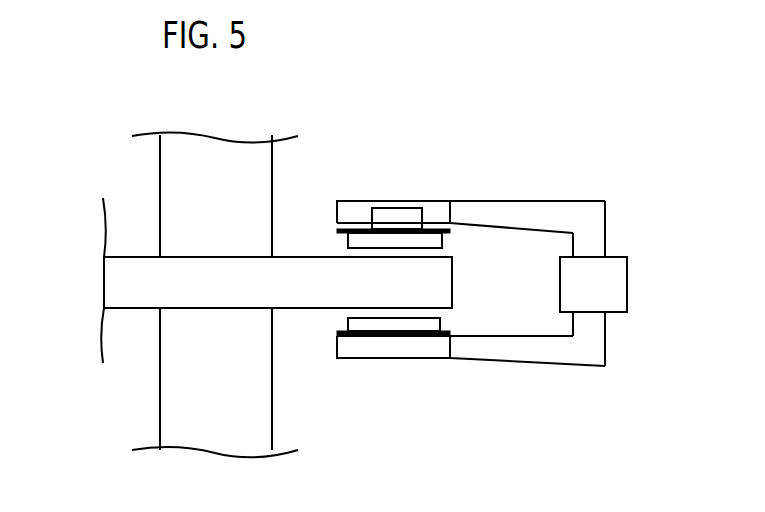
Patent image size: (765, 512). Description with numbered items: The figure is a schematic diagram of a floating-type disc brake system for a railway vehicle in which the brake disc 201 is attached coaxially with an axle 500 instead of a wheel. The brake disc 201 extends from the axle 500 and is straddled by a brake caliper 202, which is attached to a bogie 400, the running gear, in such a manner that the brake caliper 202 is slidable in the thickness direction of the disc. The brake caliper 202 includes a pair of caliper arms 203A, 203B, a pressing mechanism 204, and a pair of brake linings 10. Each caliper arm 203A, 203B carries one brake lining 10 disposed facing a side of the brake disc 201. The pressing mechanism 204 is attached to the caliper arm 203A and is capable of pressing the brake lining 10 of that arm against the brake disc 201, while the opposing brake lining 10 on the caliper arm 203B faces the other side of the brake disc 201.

The axle 500 is at (220, 160).
The brake disc 201 is at (318, 290).
The caliper arm 203A is at (527, 213).
The caliper arm 203B is at (528, 350).
The brake caliper 202 is at (588, 233).
The bogie 400 is at (605, 287).
The pressing mechanism 204 is at (397, 217).
The brake lining 10 is at (428, 240).